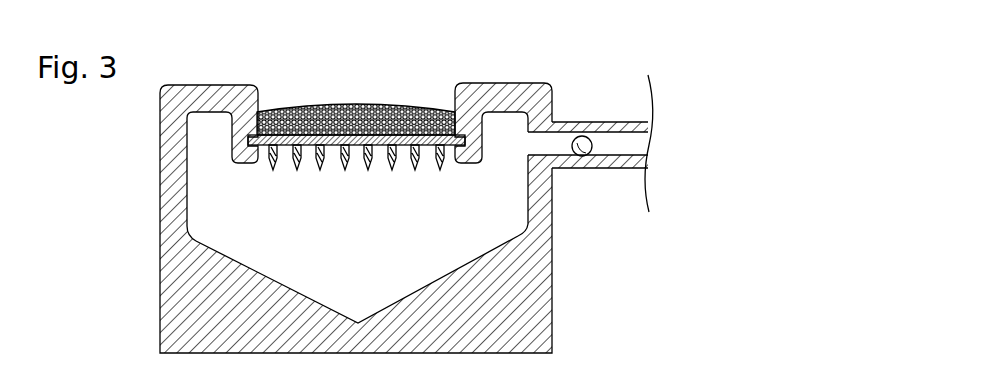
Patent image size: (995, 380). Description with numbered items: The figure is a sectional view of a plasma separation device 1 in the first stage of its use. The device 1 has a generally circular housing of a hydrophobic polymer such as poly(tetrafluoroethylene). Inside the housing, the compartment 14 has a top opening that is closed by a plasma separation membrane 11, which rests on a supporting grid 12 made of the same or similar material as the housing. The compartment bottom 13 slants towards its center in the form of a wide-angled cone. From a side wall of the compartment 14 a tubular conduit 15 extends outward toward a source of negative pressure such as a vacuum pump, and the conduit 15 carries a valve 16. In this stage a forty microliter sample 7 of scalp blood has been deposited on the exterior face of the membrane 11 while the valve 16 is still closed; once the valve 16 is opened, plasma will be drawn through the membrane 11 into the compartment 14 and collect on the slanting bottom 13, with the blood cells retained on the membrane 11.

The plasma separation device 1 is at (636, 296).
The sample 7 is at (317, 101).
The plasma separation membrane 11 is at (360, 152).
The grid 12 is at (300, 167).
The compartment bottom 13 is at (268, 278).
The compartment 14 is at (343, 240).
The tubular conduit 15 is at (587, 132).
The valve 16 is at (583, 157).